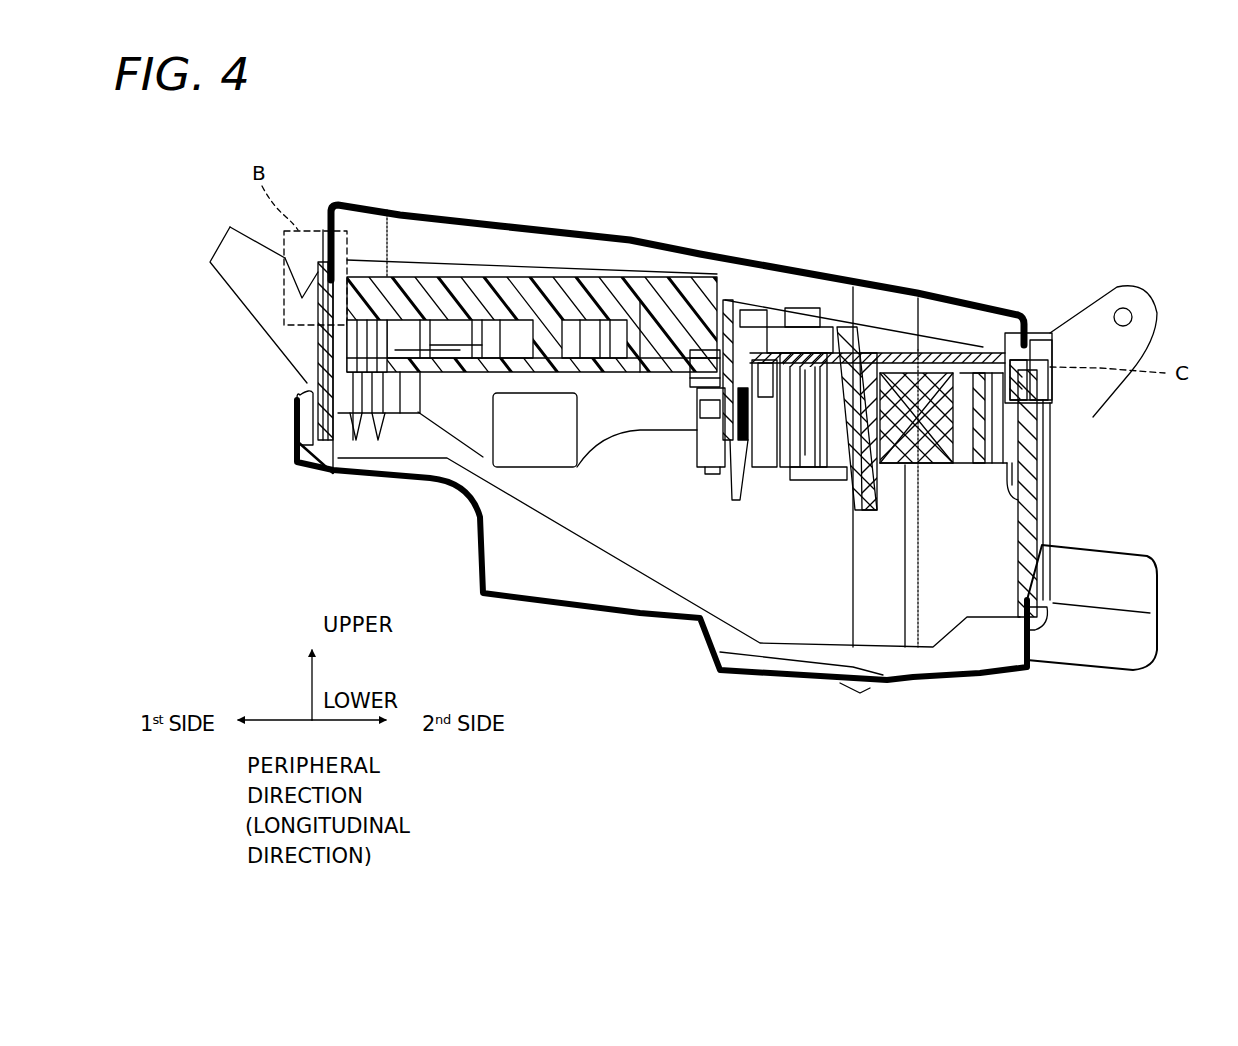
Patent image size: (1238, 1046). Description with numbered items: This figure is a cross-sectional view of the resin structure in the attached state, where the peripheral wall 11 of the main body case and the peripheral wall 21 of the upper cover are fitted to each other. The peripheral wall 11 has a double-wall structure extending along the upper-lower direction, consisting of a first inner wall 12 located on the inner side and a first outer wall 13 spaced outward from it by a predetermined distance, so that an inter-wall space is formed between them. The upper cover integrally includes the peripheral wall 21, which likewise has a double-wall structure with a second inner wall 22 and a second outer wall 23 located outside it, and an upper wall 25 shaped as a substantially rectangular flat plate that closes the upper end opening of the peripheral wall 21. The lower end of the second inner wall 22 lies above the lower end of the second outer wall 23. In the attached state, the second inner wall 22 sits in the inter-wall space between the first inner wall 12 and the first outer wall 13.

The peripheral wall 11 is at (1128, 440).
The first inner wall 12 is at (1020, 432).
The first outer wall 13 is at (1030, 485).
The peripheral wall 21 is at (330, 207).
The second inner wall 22 is at (1010, 350).
The second outer wall 23 is at (1035, 365).
The upper wall 25 is at (495, 222).